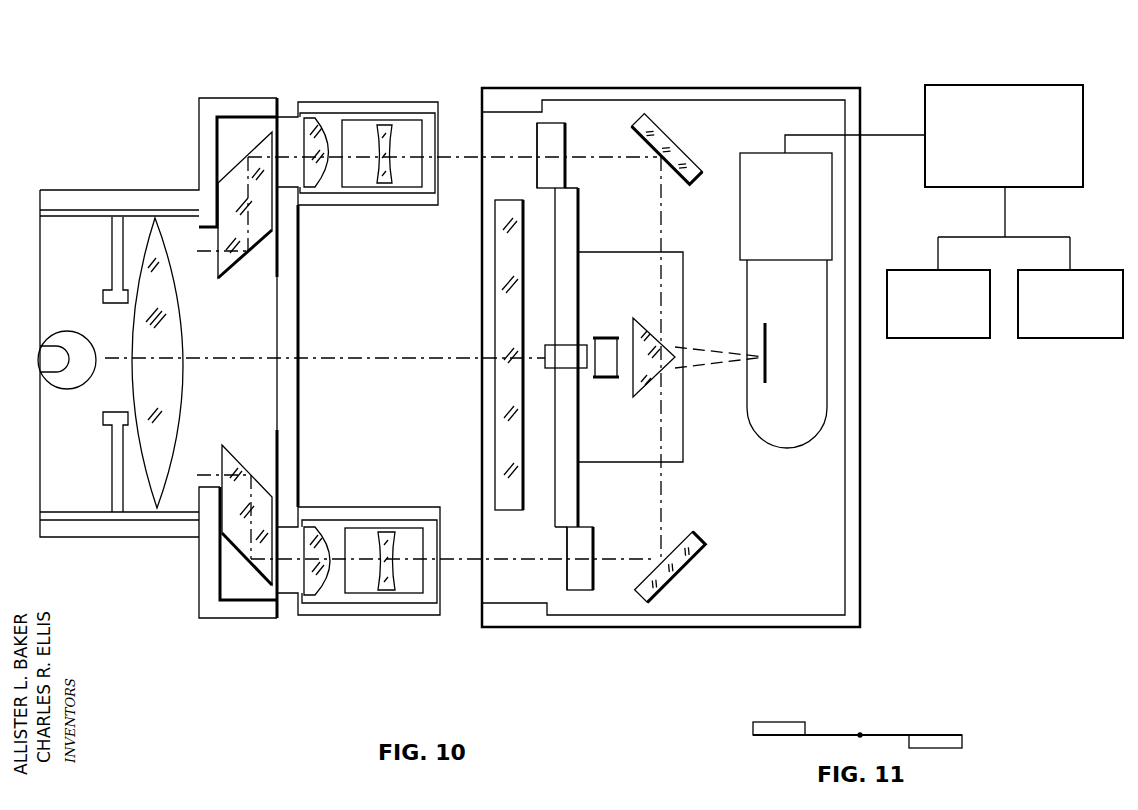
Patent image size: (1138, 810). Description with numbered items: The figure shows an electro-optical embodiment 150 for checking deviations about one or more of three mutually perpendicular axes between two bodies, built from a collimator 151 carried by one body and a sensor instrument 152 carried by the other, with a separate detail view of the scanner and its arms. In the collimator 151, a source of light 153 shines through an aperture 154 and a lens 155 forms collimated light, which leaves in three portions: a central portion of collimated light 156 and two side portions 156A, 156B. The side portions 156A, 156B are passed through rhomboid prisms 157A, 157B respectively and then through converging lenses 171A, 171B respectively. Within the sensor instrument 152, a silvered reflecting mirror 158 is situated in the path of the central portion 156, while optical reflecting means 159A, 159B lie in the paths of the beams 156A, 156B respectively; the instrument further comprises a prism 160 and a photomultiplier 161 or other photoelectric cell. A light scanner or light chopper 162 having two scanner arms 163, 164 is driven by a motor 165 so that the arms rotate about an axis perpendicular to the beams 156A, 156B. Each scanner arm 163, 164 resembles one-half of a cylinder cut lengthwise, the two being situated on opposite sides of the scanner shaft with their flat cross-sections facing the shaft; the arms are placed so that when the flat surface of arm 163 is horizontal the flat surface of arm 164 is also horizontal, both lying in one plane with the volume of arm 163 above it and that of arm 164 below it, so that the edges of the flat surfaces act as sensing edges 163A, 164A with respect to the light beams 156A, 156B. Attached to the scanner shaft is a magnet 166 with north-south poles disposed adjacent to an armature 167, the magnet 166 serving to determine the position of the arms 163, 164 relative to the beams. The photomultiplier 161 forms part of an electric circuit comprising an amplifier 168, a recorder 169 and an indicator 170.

In FIG. 10, the embodiment 150 is at (862, 630).
In FIG. 10, the collimator 151 is at (132, 515).
In FIG. 10, the sensor instrument 152 is at (748, 630).
In FIG. 10, the source of light 153 is at (67, 338).
In FIG. 10, the aperture 154 is at (115, 330).
In FIG. 10, the lens 155 is at (152, 247).
In FIG. 10, the portion of collimated light 156 is at (320, 358).
In FIG. 10, the portion of collimated light 156A is at (333, 560).
In FIG. 10, the portion of collimated light 156B is at (338, 158).
In FIG. 10, the rhomboid prism 157A is at (267, 565).
In FIG. 10, the rhomboid prism 157B is at (262, 150).
In FIG. 10, the silvered reflecting mirror 158 is at (512, 443).
In FIG. 10, the optical reflecting means 159A is at (662, 585).
In FIG. 10, the optical reflecting means 159B is at (648, 127).
In FIG. 10, the prism 160 is at (652, 375).
In FIG. 10, the photomultiplier 161 is at (813, 392).
In FIG. 10, the light scanner 162 is at (563, 303).
In FIG. 11, the light scanner 162 is at (878, 735).
In FIG. 10, the scanner arm 163 is at (585, 582).
In FIG. 11, the scanner arm 163 is at (938, 745).
In FIG. 10, the sensing edge 163A is at (565, 583).
In FIG. 10, the scanner arm 164 is at (557, 135).
In FIG. 11, the scanner arm 164 is at (778, 730).
In FIG. 10, the sensing edge 164A is at (538, 133).
In FIG. 10, the motor 165 is at (670, 450).
In FIG. 10, the magnet 166 is at (548, 368).
In FIG. 10, the armature 167 is at (597, 342).
In FIG. 10, the amplifier 168 is at (937, 92).
In FIG. 10, the recorder 169 is at (945, 327).
In FIG. 10, the indicator 170 is at (1073, 328).
In FIG. 10, the converging lens 171A is at (382, 590).
In FIG. 10, the converging lens 171B is at (382, 127).